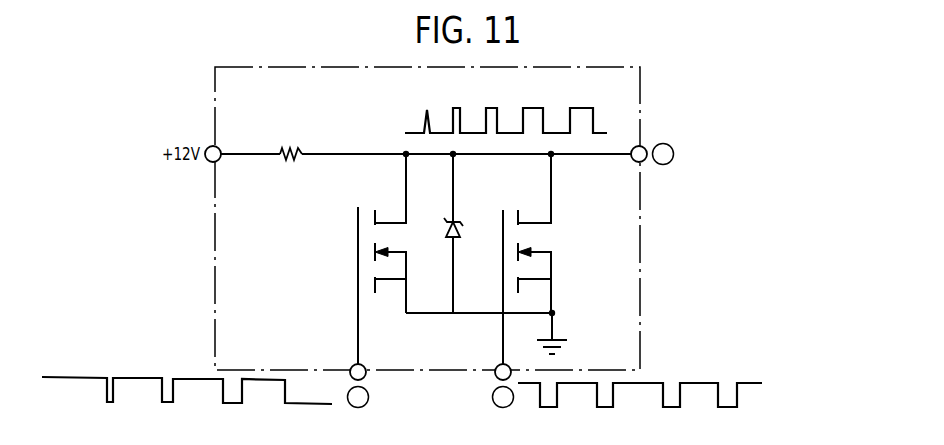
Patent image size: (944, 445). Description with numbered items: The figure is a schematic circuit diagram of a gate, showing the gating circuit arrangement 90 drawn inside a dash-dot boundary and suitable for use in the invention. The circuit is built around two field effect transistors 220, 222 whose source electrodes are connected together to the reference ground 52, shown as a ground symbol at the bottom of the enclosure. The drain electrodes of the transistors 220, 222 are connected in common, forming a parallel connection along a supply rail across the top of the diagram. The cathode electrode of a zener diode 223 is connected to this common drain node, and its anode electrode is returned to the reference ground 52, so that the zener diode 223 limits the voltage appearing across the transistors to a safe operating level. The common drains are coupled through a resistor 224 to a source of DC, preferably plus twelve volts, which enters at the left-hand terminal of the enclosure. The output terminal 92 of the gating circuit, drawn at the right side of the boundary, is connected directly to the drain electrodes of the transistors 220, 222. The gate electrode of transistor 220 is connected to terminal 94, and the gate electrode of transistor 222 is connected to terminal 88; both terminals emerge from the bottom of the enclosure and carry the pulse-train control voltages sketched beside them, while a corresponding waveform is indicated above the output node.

The resistor 224 is at (288, 146).
The field effect transistor 220 is at (379, 222).
The field effect transistor 222 is at (524, 222).
The zener diode 223 is at (457, 219).
The output terminal 92 is at (644, 163).
The gating circuit arrangement 90 is at (641, 256).
The reference ground 52 is at (565, 343).
The terminal 94 is at (365, 377).
The terminal 88 is at (495, 376).